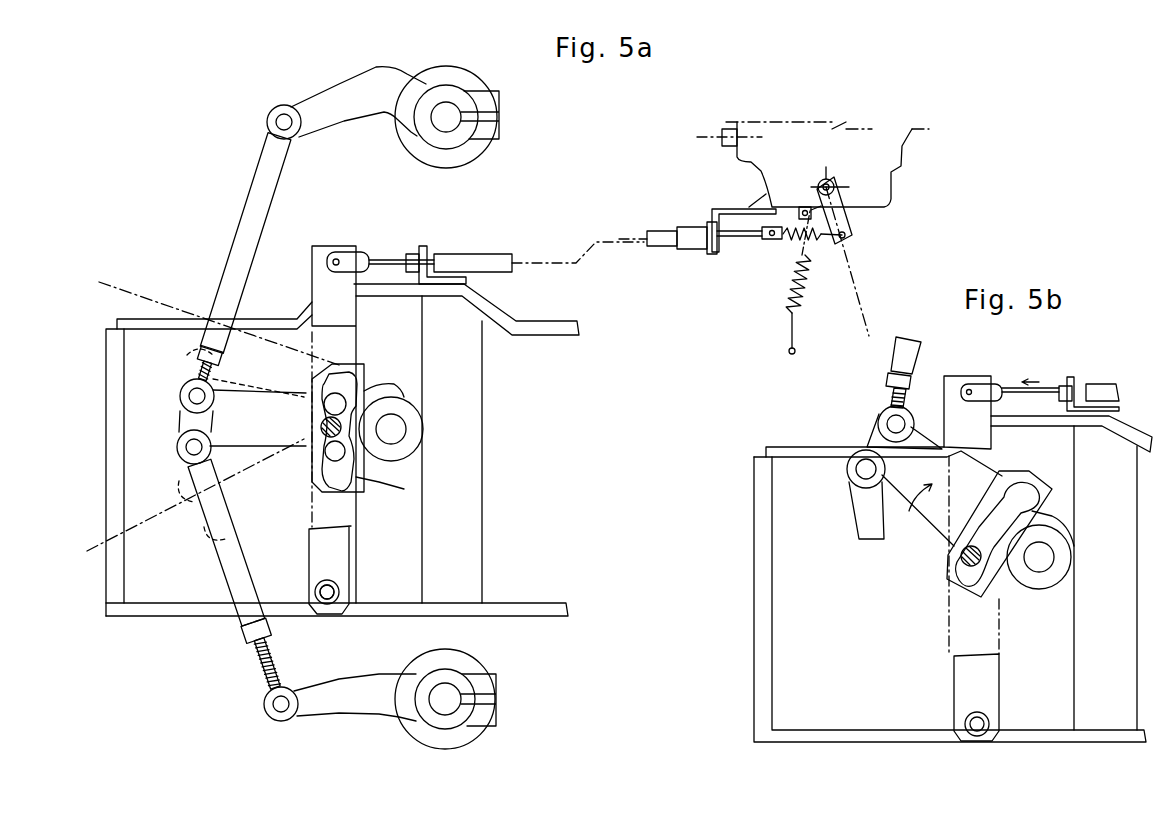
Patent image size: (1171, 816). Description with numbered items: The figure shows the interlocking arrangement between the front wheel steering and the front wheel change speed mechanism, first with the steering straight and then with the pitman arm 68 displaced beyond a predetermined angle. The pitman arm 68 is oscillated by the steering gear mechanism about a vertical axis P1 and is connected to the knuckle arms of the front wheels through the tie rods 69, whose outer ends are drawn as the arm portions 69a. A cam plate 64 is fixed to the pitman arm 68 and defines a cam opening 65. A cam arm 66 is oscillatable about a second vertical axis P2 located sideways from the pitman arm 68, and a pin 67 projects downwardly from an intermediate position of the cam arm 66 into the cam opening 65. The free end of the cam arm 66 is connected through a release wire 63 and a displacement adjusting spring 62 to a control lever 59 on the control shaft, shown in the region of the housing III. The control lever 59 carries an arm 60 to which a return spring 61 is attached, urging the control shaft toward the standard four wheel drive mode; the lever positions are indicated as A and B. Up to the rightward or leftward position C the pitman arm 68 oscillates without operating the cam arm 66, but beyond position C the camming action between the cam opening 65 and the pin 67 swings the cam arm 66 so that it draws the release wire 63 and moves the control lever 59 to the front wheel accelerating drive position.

In FIG. 5a, the control lever 59 is at (853, 223).
In FIG. 5a, the arm 60 is at (812, 208).
In FIG. 5a, the return spring 61 is at (806, 293).
In FIG. 5a, the displacement adjusting spring 62 is at (790, 241).
In FIG. 5a, the release wire 63 is at (662, 240).
In FIG. 5b, the release wire 63 is at (1100, 390).
In FIG. 5a, the cam plate 64 is at (310, 495).
In FIG. 5b, the cam plate 64 is at (1040, 473).
In FIG. 5a, the cam opening 65 is at (405, 490).
In FIG. 5b, the cam opening 65 is at (980, 575).
In FIG. 5a, the cam arm 66 is at (343, 570).
In FIG. 5b, the cam arm 66 is at (978, 677).
In FIG. 5a, the pin 67 is at (320, 440).
In FIG. 5b, the pin 67 is at (962, 560).
In FIG. 5a, the pitman arm 68 is at (183, 415).
In FIG. 5b, the pitman arm 68 is at (877, 443).
In FIG. 5a, the tie rods 69 is at (247, 203).
In FIG. 5a, the crank arm 69a is at (315, 100).
In FIG. 5a, the vertical axis P1 is at (395, 432).
In FIG. 5a, the vertical axis P2 is at (328, 603).
In FIG. 5a, the housing III is at (883, 147).
In FIG. 5a, the position A is at (868, 344).
In FIG. 5a, the position B is at (790, 325).
In FIG. 5a, the rightward or leftward position C is at (203, 419).